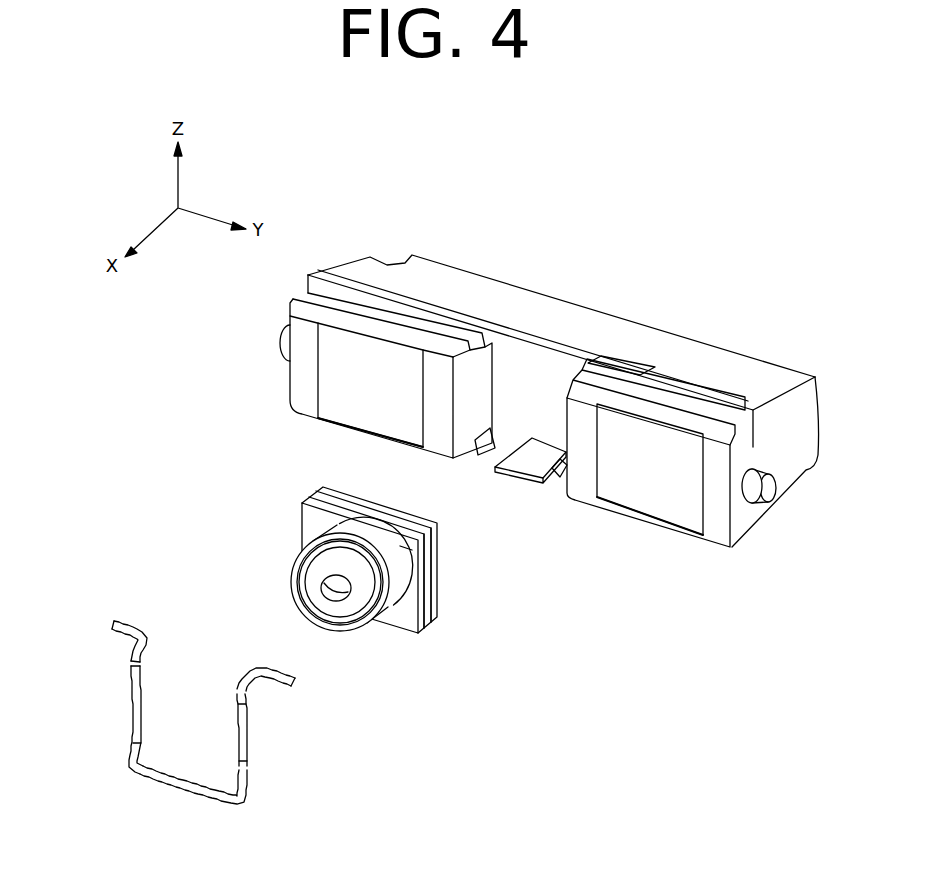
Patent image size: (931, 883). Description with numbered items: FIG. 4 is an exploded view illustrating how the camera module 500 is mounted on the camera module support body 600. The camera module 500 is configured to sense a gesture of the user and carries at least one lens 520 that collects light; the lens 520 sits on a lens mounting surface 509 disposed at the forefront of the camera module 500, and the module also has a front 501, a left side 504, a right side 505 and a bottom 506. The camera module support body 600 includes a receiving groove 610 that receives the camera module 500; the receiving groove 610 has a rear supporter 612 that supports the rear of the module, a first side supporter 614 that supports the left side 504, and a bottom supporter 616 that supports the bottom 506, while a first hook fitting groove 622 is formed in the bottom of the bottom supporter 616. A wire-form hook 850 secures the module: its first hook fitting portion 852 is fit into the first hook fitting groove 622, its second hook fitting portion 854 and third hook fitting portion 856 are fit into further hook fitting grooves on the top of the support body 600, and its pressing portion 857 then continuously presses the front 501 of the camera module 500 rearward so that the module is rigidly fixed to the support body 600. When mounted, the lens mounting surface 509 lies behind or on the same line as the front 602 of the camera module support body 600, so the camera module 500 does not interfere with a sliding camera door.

The camera module 500 is at (333, 567).
The front 501 is at (407, 548).
The left side 504 is at (362, 567).
The right side 505 is at (423, 595).
The bottom 506 is at (400, 630).
The lens mounting surface 509 is at (311, 574).
The lens 520 is at (335, 586).
The camera module support body 600 is at (549, 373).
The front 602 is at (659, 498).
The receiving groove 610 is at (550, 363).
The rear supporter 612 is at (410, 380).
The first side supporter 614 is at (478, 420).
The bottom supporter 616 is at (534, 496).
The first hook fitting groove 622 is at (552, 480).
The hook 850 is at (209, 723).
The first hook fitting portion 852 is at (180, 788).
The second hook fitting portion 854 is at (112, 626).
The third hook fitting portion 856 is at (298, 682).
The pressing portion 857 is at (132, 701).